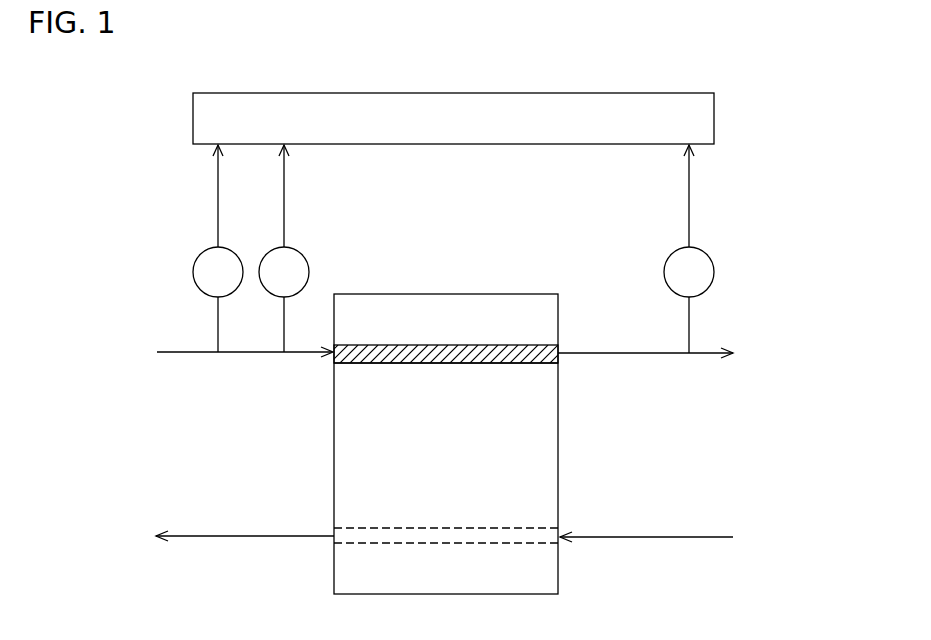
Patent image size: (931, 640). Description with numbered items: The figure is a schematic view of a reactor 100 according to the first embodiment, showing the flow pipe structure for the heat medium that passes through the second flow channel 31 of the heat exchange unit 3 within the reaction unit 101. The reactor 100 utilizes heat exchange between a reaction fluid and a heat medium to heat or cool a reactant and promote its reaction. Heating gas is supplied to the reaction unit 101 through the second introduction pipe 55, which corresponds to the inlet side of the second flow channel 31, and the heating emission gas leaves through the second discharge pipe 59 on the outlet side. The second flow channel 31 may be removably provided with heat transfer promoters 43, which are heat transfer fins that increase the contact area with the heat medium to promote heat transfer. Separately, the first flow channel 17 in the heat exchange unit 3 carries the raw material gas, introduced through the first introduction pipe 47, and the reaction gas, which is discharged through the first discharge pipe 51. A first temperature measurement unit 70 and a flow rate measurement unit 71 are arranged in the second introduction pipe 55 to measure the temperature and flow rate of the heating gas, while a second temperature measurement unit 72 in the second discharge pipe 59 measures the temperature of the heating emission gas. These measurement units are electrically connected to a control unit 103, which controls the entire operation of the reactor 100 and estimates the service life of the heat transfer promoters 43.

The reactor 100 is at (116, 81).
The control unit 103 is at (638, 93).
The first temperature measurement unit 70 is at (241, 248).
The flow rate measurement unit 71 is at (305, 248).
The second temperature measurement unit 72 is at (711, 248).
The reaction unit 101 is at (500, 268).
The heat exchange unit 3 is at (407, 294).
The heat transfer promoter 43 is at (506, 345).
The second flow channel 31 is at (432, 363).
The second introduction pipe 55 is at (247, 353).
The second discharge pipe 59 is at (621, 354).
The first flow channel 17 is at (427, 526).
The first discharge pipe 51 is at (247, 537).
The first introduction pipe 47 is at (620, 538).